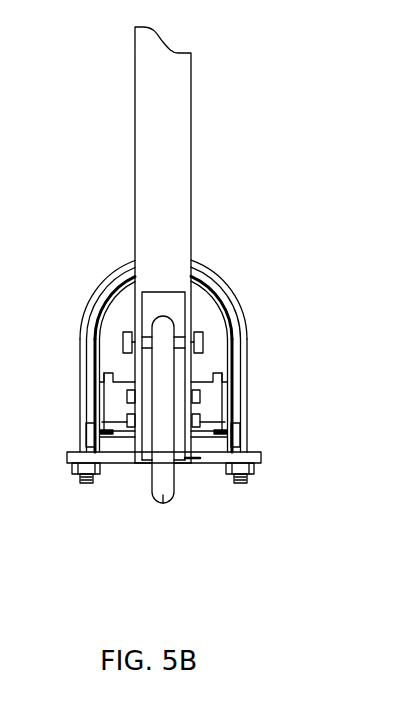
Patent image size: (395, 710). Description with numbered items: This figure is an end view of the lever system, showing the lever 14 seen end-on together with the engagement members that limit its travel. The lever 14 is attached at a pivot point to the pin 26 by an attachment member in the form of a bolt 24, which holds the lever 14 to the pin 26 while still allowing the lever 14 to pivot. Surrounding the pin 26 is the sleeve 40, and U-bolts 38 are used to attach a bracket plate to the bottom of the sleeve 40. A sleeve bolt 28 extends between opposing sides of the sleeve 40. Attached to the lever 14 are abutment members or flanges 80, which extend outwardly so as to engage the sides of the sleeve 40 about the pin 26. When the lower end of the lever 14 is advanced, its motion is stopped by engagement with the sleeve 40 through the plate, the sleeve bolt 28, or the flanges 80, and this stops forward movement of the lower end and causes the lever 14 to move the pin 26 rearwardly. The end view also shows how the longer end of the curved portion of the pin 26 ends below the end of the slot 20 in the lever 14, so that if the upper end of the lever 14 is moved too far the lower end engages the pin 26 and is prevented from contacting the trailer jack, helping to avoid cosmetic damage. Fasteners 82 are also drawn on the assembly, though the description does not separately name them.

The lever 14 is at (175, 189).
The slot 20 is at (150, 457).
The bolt 24 is at (205, 340).
The pin 26 is at (167, 495).
The sleeve bolt 28 is at (82, 453).
The U-bolts 38 is at (122, 274).
The sleeve 40 is at (230, 310).
The flange 80 is at (102, 412).
The fastener 82 is at (127, 398).